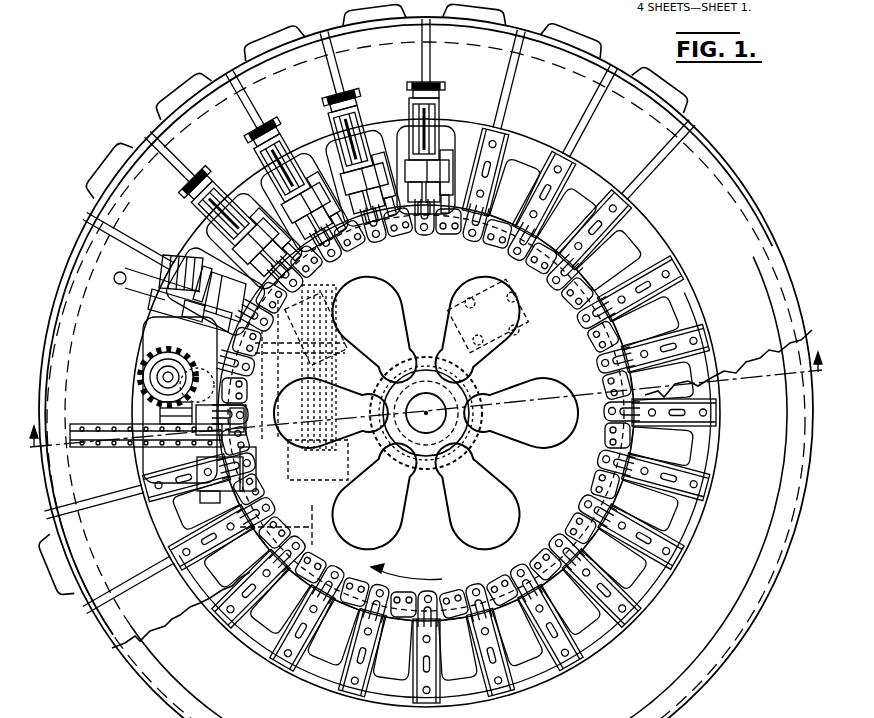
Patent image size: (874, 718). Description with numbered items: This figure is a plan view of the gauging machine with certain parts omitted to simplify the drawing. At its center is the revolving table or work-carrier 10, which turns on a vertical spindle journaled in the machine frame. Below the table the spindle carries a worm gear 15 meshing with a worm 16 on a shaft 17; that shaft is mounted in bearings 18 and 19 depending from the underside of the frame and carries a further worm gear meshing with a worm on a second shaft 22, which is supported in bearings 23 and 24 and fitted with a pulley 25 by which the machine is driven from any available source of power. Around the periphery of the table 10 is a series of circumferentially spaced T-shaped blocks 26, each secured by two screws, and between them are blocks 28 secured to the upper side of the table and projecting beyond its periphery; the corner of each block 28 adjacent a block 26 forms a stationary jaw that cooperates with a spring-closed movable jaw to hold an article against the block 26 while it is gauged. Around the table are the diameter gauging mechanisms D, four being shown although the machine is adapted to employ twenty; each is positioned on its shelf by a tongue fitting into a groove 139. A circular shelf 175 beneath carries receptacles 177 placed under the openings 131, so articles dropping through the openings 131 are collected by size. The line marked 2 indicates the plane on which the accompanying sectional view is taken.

The section line 2- 2 is at (421, 390).
The revolving table or work-carrier 10 is at (590, 478).
The worm gear 15 is at (480, 442).
The worm 16 is at (382, 305).
The shaft 17 is at (380, 322).
The bearing 18 is at (480, 288).
The bearing 19 is at (204, 400).
The shaft 22 is at (296, 472).
The bearing 23 is at (340, 263).
The bearing 24 is at (284, 451).
The pulley 25 is at (286, 530).
The T-shaped blocks 26 is at (588, 322).
The blocks 28 is at (590, 483).
The openings 131 is at (415, 415).
The groove 139 is at (426, 413).
The circular shelf 175 is at (426, 367).
The receptacles 177 is at (262, 57).
The diameter gauging mechanisms D is at (198, 208).